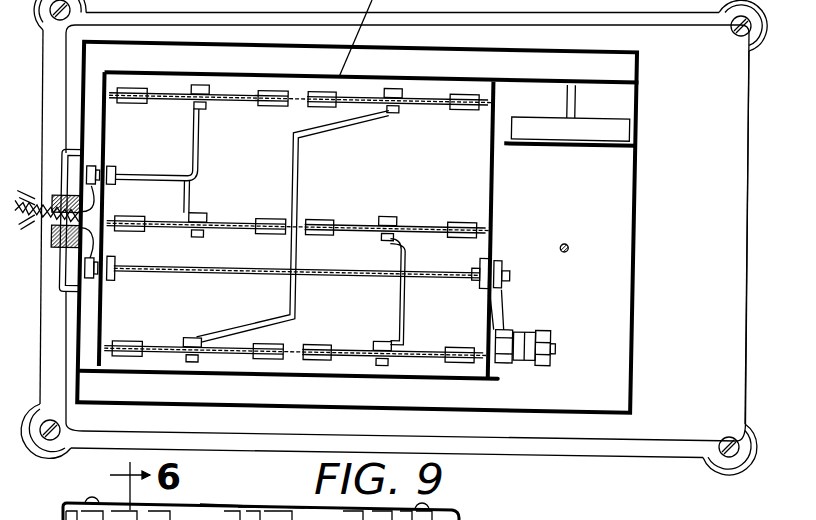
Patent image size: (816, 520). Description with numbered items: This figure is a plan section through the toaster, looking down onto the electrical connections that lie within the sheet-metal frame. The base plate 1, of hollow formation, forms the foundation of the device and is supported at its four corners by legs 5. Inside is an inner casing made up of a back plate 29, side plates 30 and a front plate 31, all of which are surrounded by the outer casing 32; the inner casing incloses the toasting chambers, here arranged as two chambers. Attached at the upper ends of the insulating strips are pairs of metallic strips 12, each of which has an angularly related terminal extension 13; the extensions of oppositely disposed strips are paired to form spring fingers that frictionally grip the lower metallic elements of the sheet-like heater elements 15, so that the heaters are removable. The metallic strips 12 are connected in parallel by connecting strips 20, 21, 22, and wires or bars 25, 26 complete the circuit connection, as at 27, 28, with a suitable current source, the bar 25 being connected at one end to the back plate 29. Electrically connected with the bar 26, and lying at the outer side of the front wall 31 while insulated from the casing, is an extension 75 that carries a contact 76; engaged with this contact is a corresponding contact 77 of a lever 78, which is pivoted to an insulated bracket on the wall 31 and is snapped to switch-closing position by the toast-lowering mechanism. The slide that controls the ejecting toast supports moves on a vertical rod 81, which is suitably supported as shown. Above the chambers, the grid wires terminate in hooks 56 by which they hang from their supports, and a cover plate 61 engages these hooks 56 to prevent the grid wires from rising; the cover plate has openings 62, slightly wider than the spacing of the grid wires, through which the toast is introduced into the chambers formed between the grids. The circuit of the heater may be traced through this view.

The base plate 1 is at (708, 201).
The legs 5 is at (762, 12).
The metallic strips 12 is at (156, 104).
The terminal extensions 13 is at (318, 96).
The heater elements 15 is at (240, 107).
The connecting strip 20 is at (190, 192).
The connecting strip 21 is at (299, 178).
The connecting strip 22 is at (405, 315).
The bar 25 is at (148, 177).
The bar 26 is at (208, 275).
The circuit connection 27 is at (82, 250).
The circuit connection 28 is at (87, 195).
The back plate 29 is at (103, 118).
The side plates 30 is at (284, 375).
The front plate 31 is at (499, 192).
The outer casing 32 is at (639, 173).
The hook 56 is at (280, 503).
The cover plate 61 is at (72, 500).
The openings 62 is at (200, 503).
The extension 75 is at (502, 300).
The contact 76 is at (518, 338).
The contact 77 is at (532, 332).
The lever 78 is at (552, 342).
The vertical rod 81 is at (569, 243).